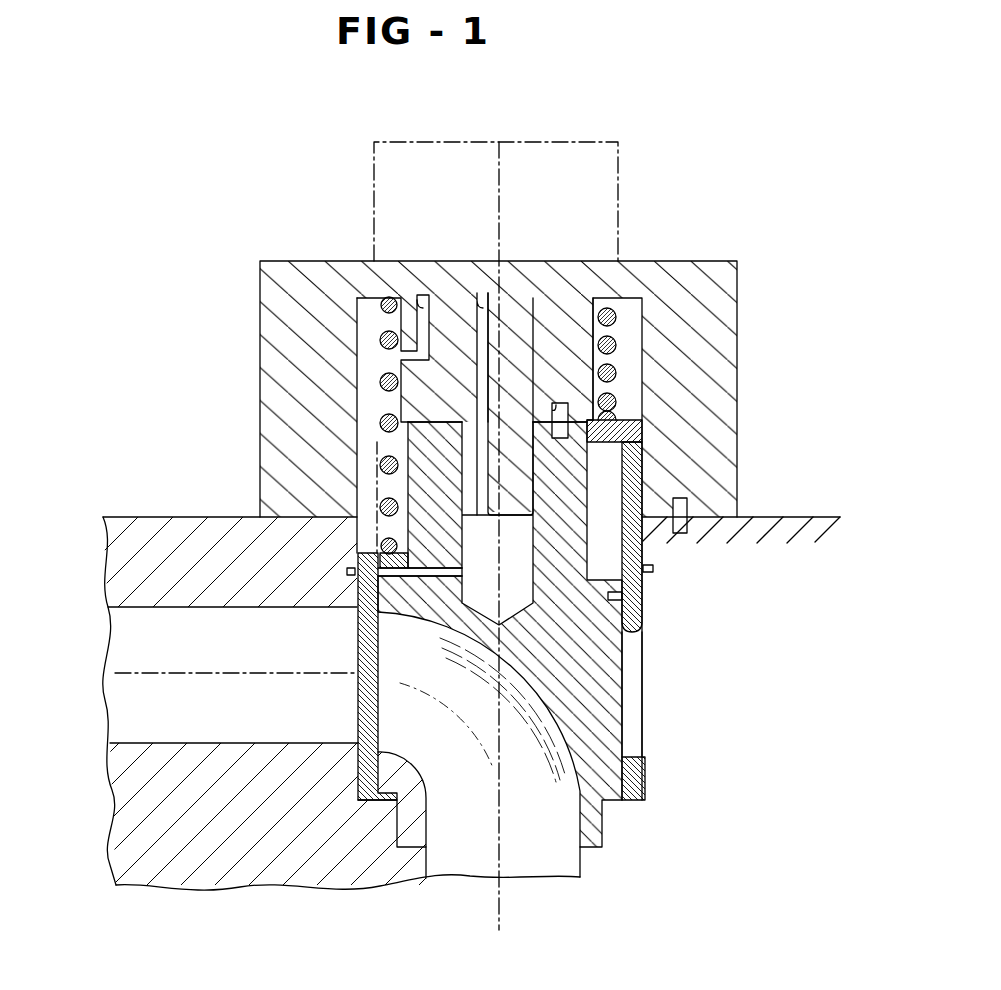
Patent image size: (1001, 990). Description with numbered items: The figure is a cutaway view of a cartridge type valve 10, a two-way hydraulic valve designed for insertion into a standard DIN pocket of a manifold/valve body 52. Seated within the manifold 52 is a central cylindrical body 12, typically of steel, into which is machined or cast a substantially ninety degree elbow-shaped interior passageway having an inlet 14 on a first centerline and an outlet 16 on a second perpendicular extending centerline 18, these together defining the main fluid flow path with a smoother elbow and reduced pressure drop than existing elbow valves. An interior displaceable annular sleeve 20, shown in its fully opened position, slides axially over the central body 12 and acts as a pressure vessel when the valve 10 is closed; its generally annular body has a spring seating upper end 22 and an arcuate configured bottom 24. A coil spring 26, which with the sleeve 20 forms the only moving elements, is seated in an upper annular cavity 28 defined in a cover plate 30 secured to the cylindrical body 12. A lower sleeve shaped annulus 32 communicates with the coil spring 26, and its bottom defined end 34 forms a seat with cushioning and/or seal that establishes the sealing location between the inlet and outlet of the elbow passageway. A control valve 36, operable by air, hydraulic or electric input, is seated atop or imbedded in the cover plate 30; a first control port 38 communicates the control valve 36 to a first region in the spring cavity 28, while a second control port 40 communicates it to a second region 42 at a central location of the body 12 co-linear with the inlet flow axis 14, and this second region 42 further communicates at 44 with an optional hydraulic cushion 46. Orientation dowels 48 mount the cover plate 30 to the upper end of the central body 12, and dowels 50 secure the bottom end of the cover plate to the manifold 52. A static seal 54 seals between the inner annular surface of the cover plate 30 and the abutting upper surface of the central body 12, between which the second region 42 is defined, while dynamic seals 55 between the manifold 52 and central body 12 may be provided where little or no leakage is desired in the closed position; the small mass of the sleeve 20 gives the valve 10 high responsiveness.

The cartridge type valve 10 is at (220, 217).
The central cylindrical body 12 is at (600, 678).
The inlet 14 is at (500, 893).
The outlet 16 is at (78, 667).
The second perpendicular extending centerline 18 is at (150, 674).
The annular sleeve 20 is at (363, 690).
The spring seating upper end 22 is at (632, 417).
The arcuate configured bottom 24 is at (640, 628).
The coil spring 26 is at (385, 345).
The upper annular cavity 28 is at (631, 337).
The cover plate 30 is at (722, 285).
The lower sleeve shaped annulus 32 is at (641, 738).
The bottom defined end 34 is at (633, 758).
The control valve 36 is at (552, 150).
The first control port 38 is at (421, 296).
The second control port 40 is at (486, 296).
The second region 42 is at (530, 558).
The communication passage 44 is at (440, 580).
The hydraulic cushion 46 is at (388, 590).
The orientation dowel 48 is at (555, 403).
The orientation dowel 50 is at (682, 528).
The manifold/valve body 52 is at (112, 535).
The static seal 54 is at (527, 433).
The dynamic seal 55 is at (650, 578).